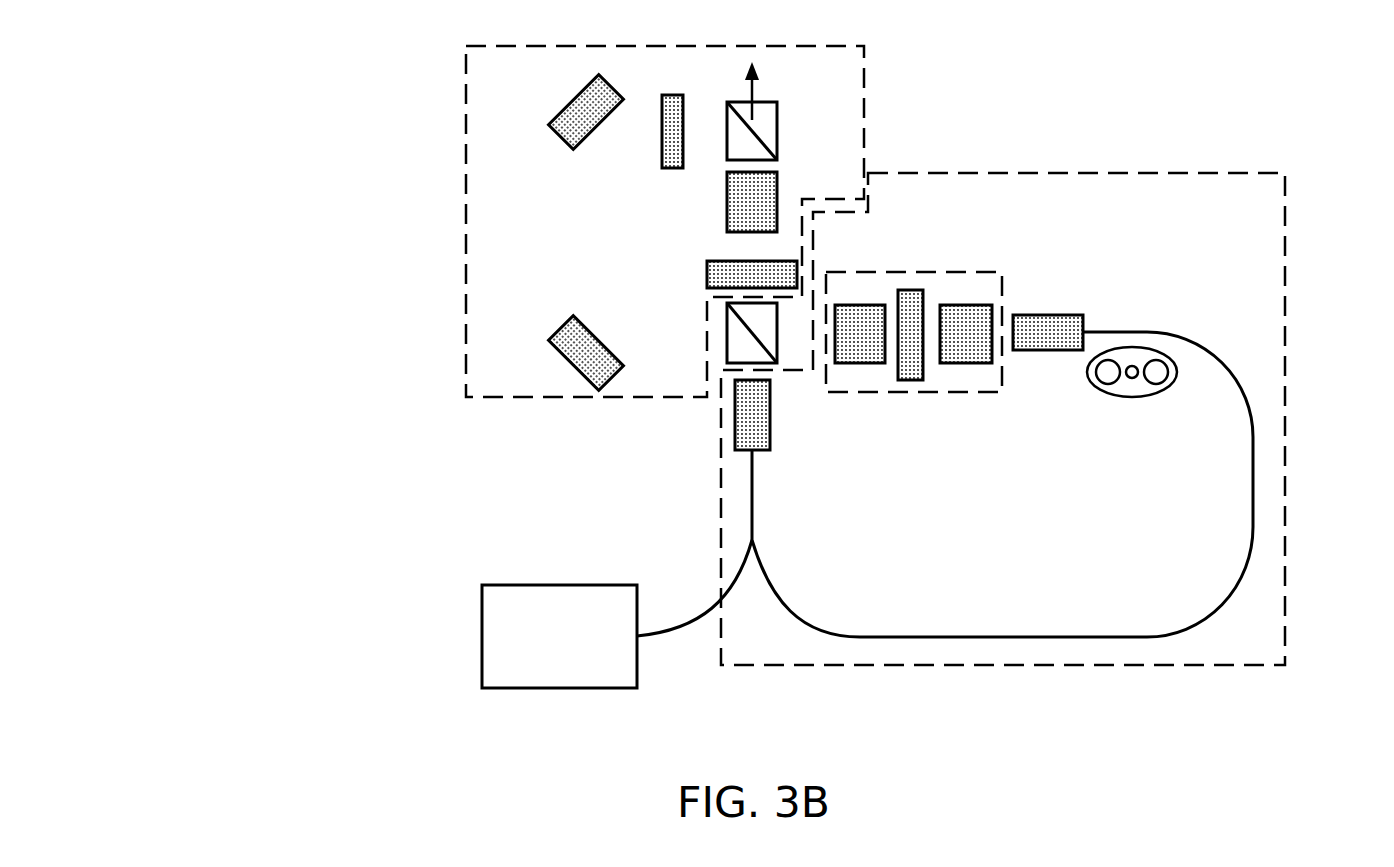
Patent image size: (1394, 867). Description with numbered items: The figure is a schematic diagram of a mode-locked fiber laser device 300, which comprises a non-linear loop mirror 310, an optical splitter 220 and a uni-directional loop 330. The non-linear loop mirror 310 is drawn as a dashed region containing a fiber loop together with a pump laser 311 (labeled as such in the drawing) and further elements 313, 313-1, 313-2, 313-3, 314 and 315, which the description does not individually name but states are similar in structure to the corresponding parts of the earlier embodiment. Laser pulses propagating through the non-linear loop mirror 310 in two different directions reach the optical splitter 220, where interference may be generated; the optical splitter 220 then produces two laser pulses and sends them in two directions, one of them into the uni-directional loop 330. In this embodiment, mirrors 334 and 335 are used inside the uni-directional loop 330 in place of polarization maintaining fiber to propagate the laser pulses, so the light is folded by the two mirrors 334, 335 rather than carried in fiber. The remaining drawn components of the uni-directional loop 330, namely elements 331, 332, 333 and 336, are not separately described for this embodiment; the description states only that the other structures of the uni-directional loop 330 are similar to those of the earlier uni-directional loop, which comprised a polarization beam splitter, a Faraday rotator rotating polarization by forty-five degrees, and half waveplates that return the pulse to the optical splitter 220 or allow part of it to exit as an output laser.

The mode-locked fiber laser device 300 is at (254, 112).
The uni-directional loop 330 is at (465, 137).
The non-linear loop mirror 310 is at (1288, 300).
The pump laser 311 is at (482, 635).
The optical component group 313 is at (1000, 278).
The optical component 313-1 is at (905, 290).
The optical component 313-2 is at (862, 305).
The optical component 313-3 is at (967, 305).
The fiber coupler / collimator 314 is at (772, 415).
The collimator 315 is at (1068, 313).
The optical splitter 220 is at (727, 310).
The beam splitter 331 is at (778, 128).
The optical element 332 is at (778, 197).
The optical element 333 is at (727, 260).
The mirror 334 is at (575, 95).
The mirror 335 is at (573, 365).
The optical element 336 is at (662, 160).